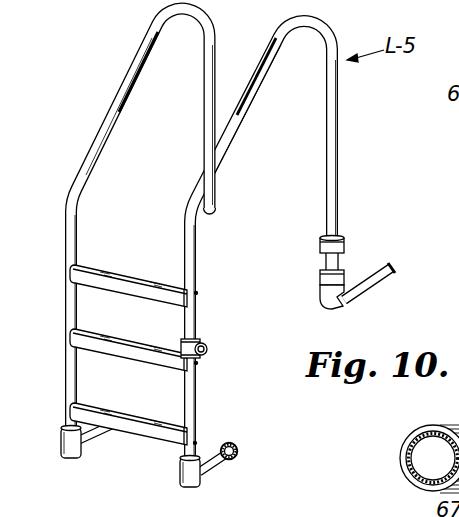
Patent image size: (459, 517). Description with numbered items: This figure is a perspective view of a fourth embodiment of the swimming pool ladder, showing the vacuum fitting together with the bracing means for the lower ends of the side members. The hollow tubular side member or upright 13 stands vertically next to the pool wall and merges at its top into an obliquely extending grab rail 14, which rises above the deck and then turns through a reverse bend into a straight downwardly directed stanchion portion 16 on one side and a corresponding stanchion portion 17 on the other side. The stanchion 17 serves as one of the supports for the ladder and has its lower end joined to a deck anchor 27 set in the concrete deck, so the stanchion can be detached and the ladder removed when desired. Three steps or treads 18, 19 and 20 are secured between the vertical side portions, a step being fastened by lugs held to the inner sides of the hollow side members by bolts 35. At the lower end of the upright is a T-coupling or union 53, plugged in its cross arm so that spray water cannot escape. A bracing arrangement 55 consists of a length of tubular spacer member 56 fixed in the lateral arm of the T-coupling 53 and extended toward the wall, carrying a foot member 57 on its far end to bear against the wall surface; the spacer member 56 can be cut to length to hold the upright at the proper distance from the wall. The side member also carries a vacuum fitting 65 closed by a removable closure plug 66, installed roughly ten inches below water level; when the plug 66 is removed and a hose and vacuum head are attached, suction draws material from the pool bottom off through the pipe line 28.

The side member or upright 13 is at (65, 229).
The grab rail 14 is at (129, 66).
The stanchion portion 16 is at (204, 108).
The stanchion portion 17 is at (339, 118).
The step or tread 18 is at (110, 264).
The step or tread 19 is at (97, 336).
The step or tread 20 is at (99, 412).
The deck anchor 27 is at (341, 247).
The pipe line 28 is at (372, 288).
The bolt 35 is at (197, 293).
The T-coupling or union 53 is at (60, 456).
The bracing arrangement 55 is at (240, 445).
The tubular spacer member 56 is at (95, 442).
The foot member 57 is at (237, 455).
The vacuum fitting 65 is at (199, 340).
The removable closure plug 66 is at (207, 350).